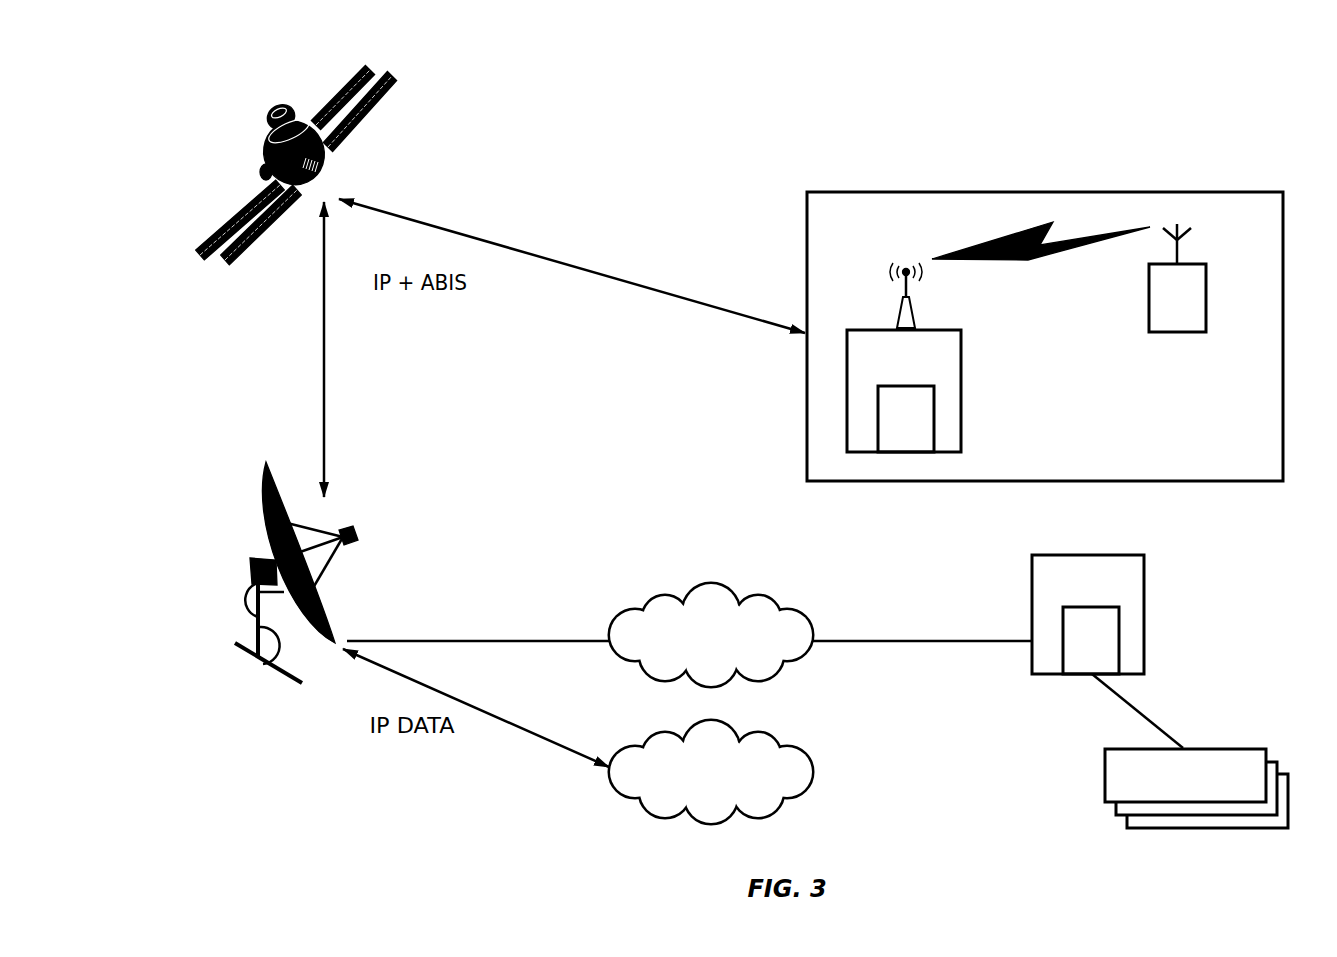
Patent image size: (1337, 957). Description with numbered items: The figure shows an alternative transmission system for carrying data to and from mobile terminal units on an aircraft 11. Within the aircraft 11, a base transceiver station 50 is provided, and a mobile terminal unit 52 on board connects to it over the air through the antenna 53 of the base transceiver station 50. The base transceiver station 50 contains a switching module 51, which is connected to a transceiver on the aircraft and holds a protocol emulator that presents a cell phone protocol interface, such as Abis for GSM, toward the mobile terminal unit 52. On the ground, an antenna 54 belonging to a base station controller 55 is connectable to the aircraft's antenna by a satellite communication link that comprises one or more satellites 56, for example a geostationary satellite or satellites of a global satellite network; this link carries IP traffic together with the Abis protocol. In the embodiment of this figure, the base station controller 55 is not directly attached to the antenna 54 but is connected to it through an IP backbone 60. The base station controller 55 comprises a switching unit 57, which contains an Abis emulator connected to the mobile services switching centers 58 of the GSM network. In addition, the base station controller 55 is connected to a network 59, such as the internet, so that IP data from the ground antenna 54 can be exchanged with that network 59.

The aircraft 11 is at (1045, 191).
The base transceiver station 50 is at (961, 368).
The switching module 51 is at (934, 425).
The mobile terminal unit 52 is at (1206, 298).
The antenna 53 is at (888, 274).
The antenna 54 is at (259, 510).
The base station controller 55 is at (1144, 592).
The satellite 56 is at (216, 258).
The switching unit 57 is at (1119, 648).
The mobile services switching centers 58 is at (1103, 776).
The network 59 is at (808, 760).
The IP backbone 60 is at (812, 623).